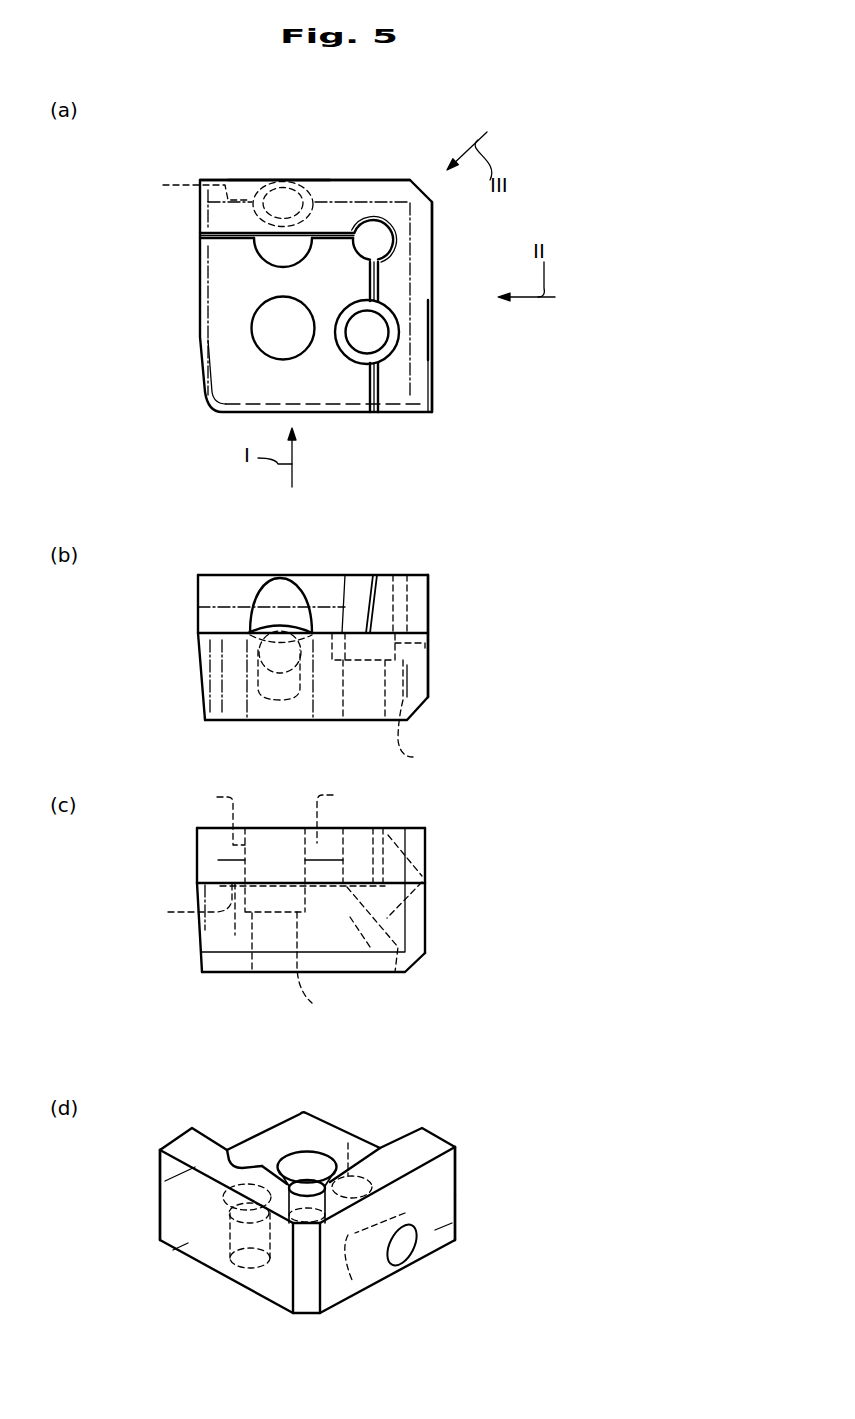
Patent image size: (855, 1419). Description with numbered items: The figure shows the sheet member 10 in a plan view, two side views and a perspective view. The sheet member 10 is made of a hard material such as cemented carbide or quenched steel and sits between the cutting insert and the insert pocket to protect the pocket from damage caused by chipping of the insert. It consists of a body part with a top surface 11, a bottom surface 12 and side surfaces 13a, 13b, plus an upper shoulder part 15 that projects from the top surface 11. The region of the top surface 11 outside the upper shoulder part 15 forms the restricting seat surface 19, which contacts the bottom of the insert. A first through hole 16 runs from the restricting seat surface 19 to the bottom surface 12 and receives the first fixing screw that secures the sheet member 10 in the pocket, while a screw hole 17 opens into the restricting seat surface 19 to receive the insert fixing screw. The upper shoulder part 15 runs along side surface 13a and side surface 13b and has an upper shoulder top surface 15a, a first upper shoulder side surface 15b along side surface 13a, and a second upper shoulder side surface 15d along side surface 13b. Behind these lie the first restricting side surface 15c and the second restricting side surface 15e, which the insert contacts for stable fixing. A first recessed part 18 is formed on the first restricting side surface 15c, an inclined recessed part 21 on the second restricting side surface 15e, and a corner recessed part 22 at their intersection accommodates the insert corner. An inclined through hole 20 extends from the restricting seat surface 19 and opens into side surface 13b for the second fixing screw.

The sheet member 10 is at (198, 413).
The top surface 11 is at (303, 1131).
The bottom surface 12 is at (239, 720).
The side surface 13a is at (430, 675).
The side surface 13b is at (427, 933).
The upper shoulder part 15 is at (393, 188).
The upper shoulder top surface 15a is at (354, 190).
The first upper shoulder side surface 15b is at (428, 357).
The first restricting side surface 15c is at (372, 262).
The second upper shoulder side surface 15d is at (229, 180).
The second restricting side surface 15e is at (327, 233).
The first through hole 16 is at (362, 336).
The screw hole 17 is at (262, 329).
The first recessed part 18 is at (400, 331).
The restricting seat surface 19 is at (227, 372).
The inclined through hole 20 is at (446, 1294).
The inclined recessed part 21 is at (282, 264).
The corner recessed part 22 is at (400, 232).